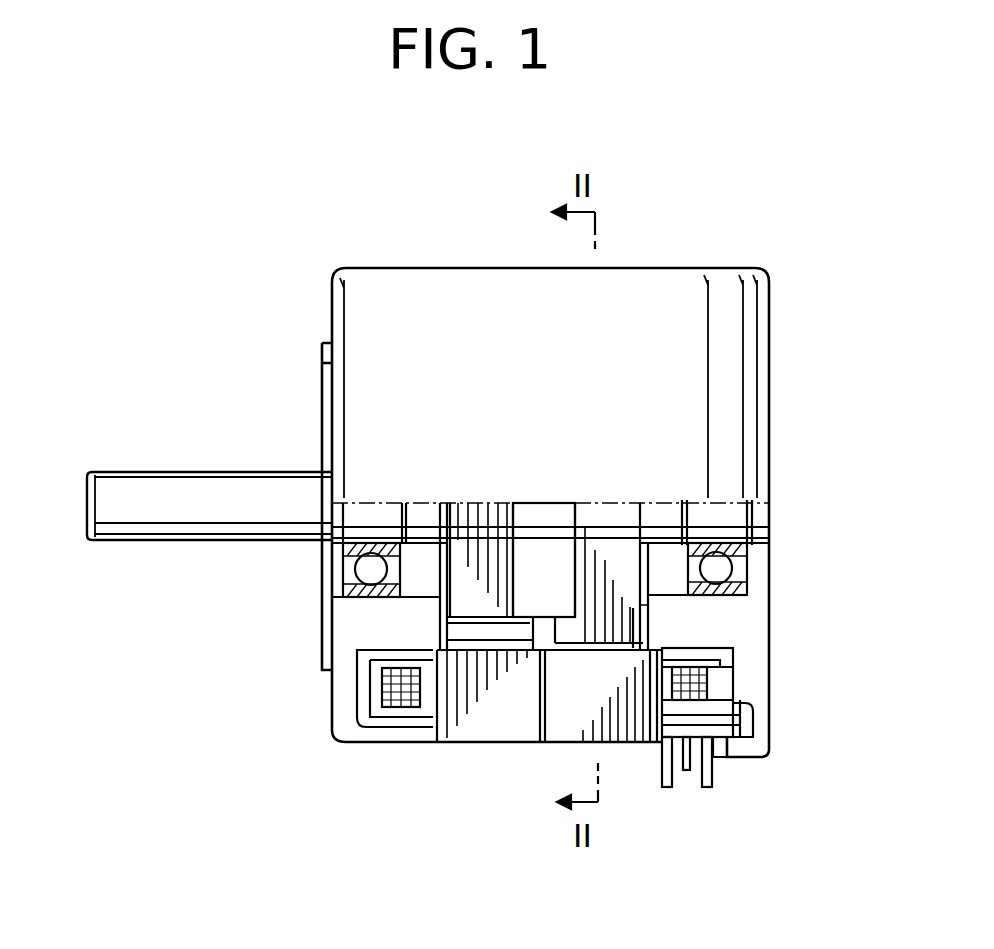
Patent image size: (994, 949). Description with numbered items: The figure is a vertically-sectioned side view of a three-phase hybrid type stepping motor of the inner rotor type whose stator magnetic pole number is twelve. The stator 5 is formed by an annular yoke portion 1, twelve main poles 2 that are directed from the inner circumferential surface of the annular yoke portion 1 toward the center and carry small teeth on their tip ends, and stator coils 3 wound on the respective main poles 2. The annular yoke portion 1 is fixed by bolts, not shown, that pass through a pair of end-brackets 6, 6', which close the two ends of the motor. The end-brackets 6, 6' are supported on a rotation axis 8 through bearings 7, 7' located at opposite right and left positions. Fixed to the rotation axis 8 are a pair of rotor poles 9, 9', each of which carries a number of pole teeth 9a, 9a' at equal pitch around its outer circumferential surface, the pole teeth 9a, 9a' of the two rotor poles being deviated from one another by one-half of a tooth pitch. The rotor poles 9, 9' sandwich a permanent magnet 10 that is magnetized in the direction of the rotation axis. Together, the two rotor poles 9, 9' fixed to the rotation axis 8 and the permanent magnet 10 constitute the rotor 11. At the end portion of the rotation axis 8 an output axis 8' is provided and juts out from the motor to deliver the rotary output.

The annular yoke portion 1 is at (628, 745).
The main poles 2 is at (467, 650).
The stator coils 3 is at (740, 680).
The stator 5 is at (447, 777).
The end-bracket 6 is at (513, 512).
The end-bracket 6' is at (765, 745).
The bearing 7 is at (355, 576).
The bearing 7' is at (754, 575).
The rotation axis 8 is at (428, 466).
The output axis 8' is at (122, 558).
The rotor pole 9 is at (418, 564).
The rotor pole 9' is at (754, 599).
The pole teeth 9a is at (549, 721).
The pole teeth 9a' is at (732, 579).
The permanent magnet 10 is at (540, 590).
The rotor 11 is at (662, 512).